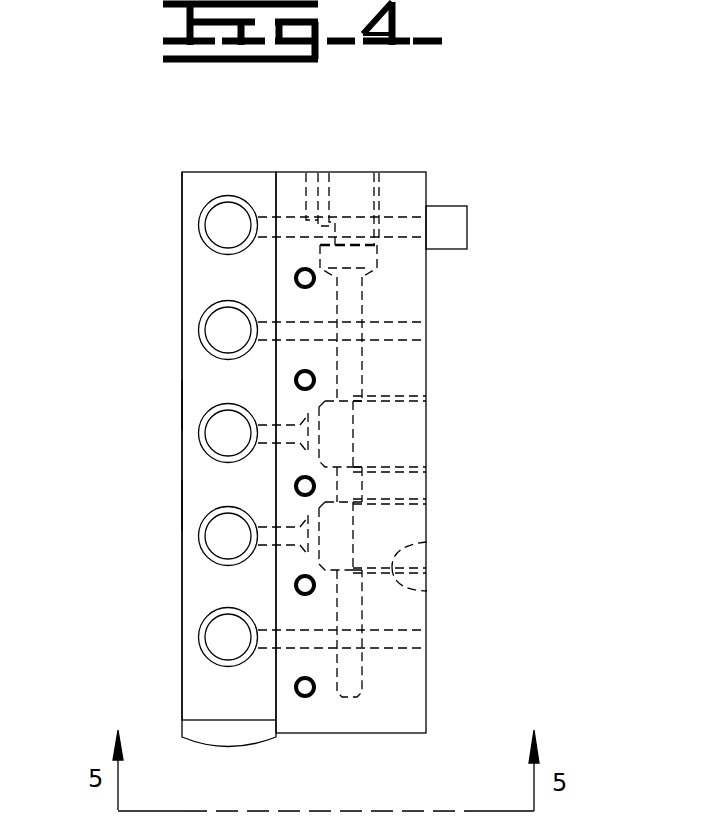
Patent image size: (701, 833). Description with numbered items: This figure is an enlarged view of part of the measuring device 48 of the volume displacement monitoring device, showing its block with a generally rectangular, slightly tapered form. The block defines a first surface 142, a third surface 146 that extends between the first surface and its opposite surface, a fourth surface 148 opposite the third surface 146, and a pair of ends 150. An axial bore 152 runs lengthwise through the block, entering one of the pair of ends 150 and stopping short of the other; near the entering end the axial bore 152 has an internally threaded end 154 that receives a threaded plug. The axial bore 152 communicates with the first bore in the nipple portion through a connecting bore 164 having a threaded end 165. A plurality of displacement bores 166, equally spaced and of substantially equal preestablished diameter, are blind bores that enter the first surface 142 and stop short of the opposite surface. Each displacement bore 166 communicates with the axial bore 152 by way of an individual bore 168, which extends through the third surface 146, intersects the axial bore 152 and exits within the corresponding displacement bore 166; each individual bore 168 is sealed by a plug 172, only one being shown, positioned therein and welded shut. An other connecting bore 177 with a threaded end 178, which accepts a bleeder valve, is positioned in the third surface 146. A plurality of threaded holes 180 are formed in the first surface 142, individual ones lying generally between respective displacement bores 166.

The measuring device 48 is at (182, 507).
The first surface 142 is at (208, 273).
The third surface 146 is at (427, 517).
The fourth surface 148 is at (182, 402).
The pair of ends 150 is at (287, 172).
The axial bore 152 is at (362, 608).
The internally threaded end 154 is at (375, 190).
The connecting bore 164 is at (408, 401).
The threaded end 165 is at (408, 470).
The displacement bores 166 is at (213, 610).
The individual bore 168 is at (270, 215).
The plug 172 is at (450, 249).
The other connecting bore 177 is at (427, 542).
The threaded end 178 is at (427, 592).
The threaded holes 180 is at (295, 380).